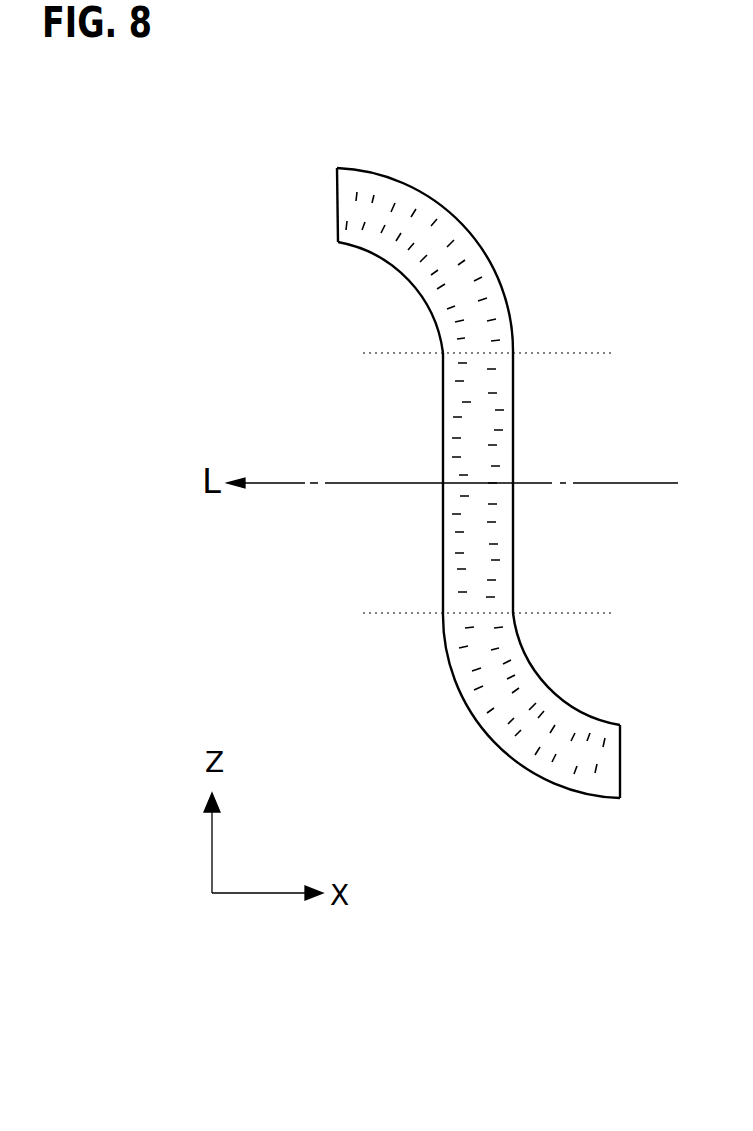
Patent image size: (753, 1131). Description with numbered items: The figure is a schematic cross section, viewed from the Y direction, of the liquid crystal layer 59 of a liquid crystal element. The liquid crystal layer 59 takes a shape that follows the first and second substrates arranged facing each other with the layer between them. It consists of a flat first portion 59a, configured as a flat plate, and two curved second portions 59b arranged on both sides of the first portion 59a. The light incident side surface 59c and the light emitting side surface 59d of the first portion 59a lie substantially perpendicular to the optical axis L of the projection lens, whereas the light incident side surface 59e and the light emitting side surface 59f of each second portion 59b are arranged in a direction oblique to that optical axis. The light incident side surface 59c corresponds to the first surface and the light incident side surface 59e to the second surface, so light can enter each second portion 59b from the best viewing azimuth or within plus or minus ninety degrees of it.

The liquid crystal layer 59 is at (520, 952).
The first portion 59a is at (462, 556).
The second portion 59b is at (402, 206).
The light incident side surface 59c is at (514, 433).
The light emitting side surface 59d is at (443, 417).
The light incident side surface 59e is at (486, 258).
The light emitting side surface 59f is at (411, 281).